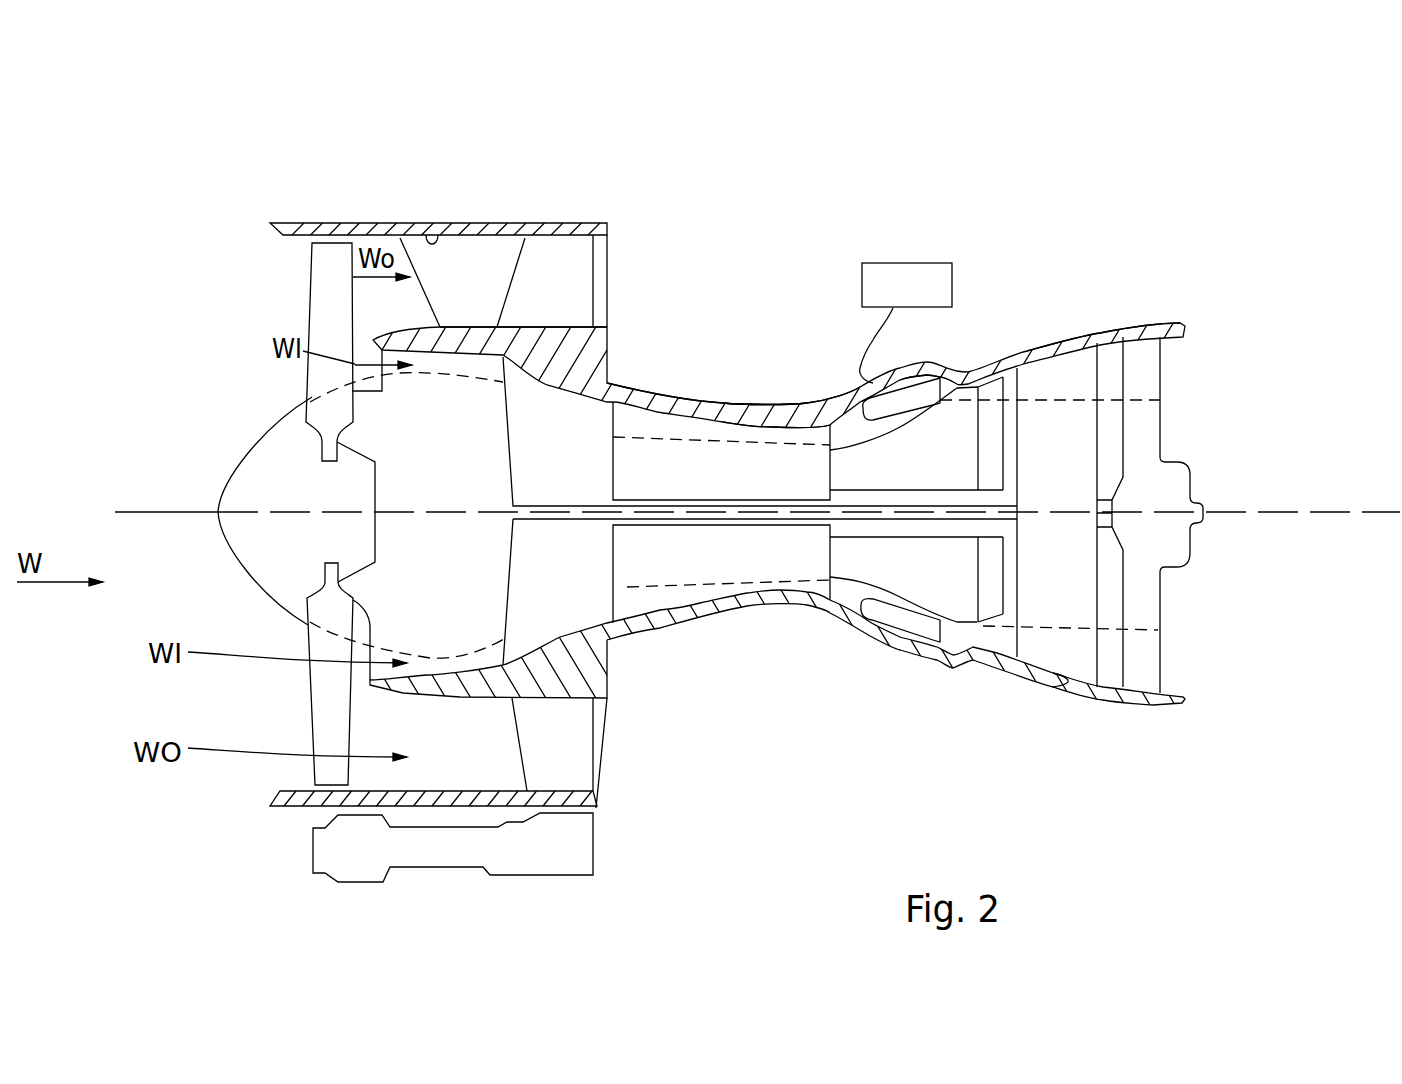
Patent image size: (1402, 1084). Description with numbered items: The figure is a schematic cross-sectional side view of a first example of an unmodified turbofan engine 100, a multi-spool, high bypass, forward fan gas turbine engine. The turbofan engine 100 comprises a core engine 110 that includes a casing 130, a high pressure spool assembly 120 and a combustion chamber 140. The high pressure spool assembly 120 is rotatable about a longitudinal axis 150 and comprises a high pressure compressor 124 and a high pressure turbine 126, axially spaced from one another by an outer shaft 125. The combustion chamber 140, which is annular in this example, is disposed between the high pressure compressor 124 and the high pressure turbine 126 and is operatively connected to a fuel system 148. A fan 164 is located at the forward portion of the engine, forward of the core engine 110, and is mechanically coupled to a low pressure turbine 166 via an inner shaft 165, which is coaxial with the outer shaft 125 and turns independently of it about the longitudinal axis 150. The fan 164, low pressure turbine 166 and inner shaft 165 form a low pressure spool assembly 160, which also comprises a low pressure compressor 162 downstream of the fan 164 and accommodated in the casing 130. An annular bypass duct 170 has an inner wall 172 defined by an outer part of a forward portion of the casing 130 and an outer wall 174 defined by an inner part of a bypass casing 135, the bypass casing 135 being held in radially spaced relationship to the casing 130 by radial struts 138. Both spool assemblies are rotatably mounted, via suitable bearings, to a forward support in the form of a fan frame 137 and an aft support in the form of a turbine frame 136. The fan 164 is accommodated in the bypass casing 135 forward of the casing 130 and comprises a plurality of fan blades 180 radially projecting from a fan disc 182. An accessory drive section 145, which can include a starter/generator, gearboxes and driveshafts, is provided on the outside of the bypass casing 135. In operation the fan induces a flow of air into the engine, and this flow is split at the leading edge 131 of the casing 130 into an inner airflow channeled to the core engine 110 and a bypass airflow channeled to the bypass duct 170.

The turbofan engine 100 is at (1090, 165).
The core engine 110 is at (767, 402).
The high pressure spool assembly 120 is at (782, 425).
The high pressure compressor 124 is at (673, 433).
The outer shaft 125 is at (995, 427).
The high pressure turbine 126 is at (1083, 340).
The casing 130 is at (668, 390).
The leading edge 131 is at (372, 340).
The bypass casing 135 is at (566, 223).
The turbine frame 136 is at (1143, 428).
The fan frame 137 is at (578, 318).
The radial struts 138 is at (585, 257).
The combustion chamber 140 is at (913, 395).
The accessory drive section 145 is at (572, 845).
The fuel system 148 is at (927, 300).
The longitudinal axis 150 is at (1238, 513).
The low pressure spool assembly 160 is at (557, 503).
The low pressure compressor 162 is at (465, 398).
The fan 164 is at (302, 390).
The inner shaft 165 is at (878, 519).
The low pressure turbine 166 is at (1085, 378).
The annular bypass duct 170 is at (373, 298).
The inner wall 172 is at (402, 238).
The outer wall 174 is at (432, 246).
The fan blades 180 is at (305, 399).
The fan disc 182 is at (323, 425).